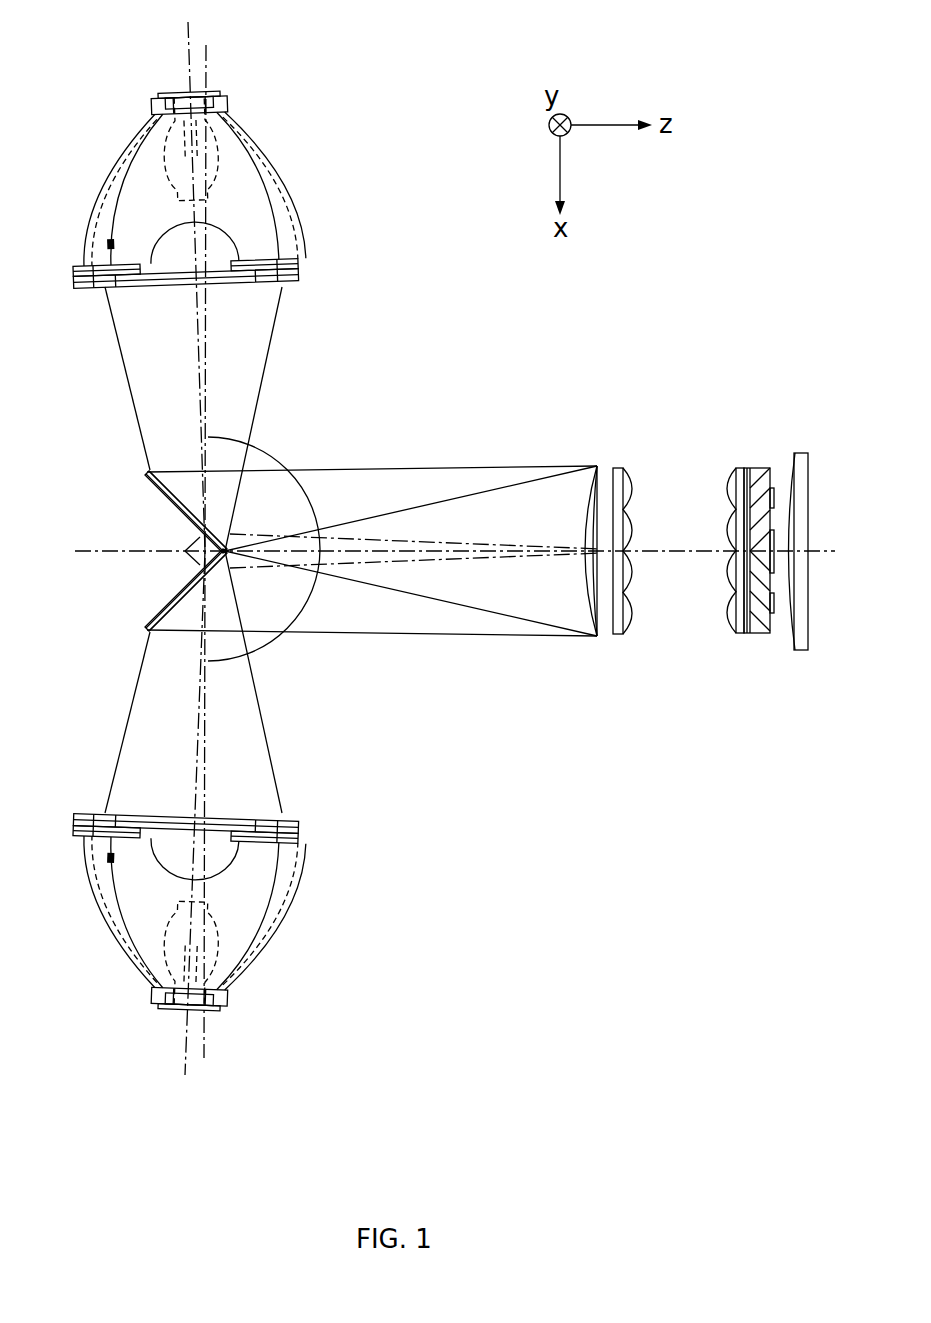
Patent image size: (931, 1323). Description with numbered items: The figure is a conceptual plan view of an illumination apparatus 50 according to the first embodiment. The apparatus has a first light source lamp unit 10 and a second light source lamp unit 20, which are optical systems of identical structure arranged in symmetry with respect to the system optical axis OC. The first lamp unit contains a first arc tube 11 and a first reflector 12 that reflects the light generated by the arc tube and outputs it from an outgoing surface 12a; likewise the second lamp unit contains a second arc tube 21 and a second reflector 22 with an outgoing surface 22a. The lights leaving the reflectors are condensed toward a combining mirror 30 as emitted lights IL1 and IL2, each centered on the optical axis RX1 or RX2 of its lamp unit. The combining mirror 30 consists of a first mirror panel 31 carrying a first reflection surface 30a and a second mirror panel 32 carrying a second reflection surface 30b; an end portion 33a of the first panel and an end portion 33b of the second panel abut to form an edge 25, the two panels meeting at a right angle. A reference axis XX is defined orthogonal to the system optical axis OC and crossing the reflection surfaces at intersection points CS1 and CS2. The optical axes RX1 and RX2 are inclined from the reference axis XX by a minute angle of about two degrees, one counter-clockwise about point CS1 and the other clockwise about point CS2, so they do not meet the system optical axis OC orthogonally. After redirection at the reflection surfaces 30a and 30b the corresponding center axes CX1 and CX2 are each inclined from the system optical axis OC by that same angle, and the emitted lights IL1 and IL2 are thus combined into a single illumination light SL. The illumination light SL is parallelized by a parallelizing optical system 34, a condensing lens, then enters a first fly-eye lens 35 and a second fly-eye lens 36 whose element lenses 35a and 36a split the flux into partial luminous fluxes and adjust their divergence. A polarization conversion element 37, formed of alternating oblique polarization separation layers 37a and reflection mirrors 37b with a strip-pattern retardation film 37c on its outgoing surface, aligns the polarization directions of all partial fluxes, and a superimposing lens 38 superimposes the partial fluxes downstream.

The first light source lamp unit 10 is at (222, 187).
The first arc tube 11 is at (217, 149).
The first reflector 12 is at (110, 175).
The outgoing surface 12a is at (288, 286).
The second light source lamp unit 20 is at (238, 916).
The second arc tube 21 is at (142, 987).
The second reflector 22 is at (300, 877).
The outgoing surface 22a is at (290, 815).
The edge 25 is at (227, 548).
The combining mirror 30 is at (199, 542).
The first reflection surface 30a is at (162, 470).
The second reflection surface 30b is at (173, 613).
The first mirror panel 31 is at (188, 492).
The second mirror panel 32 is at (188, 600).
The end portion of first mirror panel 33a is at (222, 530).
The end portion of second mirror panel 33b is at (223, 567).
The parallelizing optical system 34 is at (597, 466).
The first fly-eye lens 35 is at (657, 503).
The element lenses 35a is at (634, 510).
The second fly-eye lens 36 is at (696, 545).
The element lenses 36a is at (727, 615).
The polarization conversion element 37 is at (758, 535).
The polarization separation layers 37a is at (774, 493).
The reflection mirrors 37b is at (750, 480).
The retardation film 37c is at (772, 615).
The superimposing lens 38 is at (810, 485).
The illumination apparatus 50 is at (757, 36).
The system optical axis OC is at (377, 548).
The center axis CX1 is at (452, 540).
The center axis CX2 is at (390, 565).
The emitted light IL1 is at (273, 324).
The emitted light IL2 is at (258, 700).
The optical axis of first lamp unit RX1 is at (203, 350).
The optical axis of second lamp unit RX2 is at (205, 752).
The reference axis XX is at (207, 303).
The illumination light SL is at (472, 648).
The intersection point CS1 is at (258, 413).
The intersection point CS2 is at (243, 636).